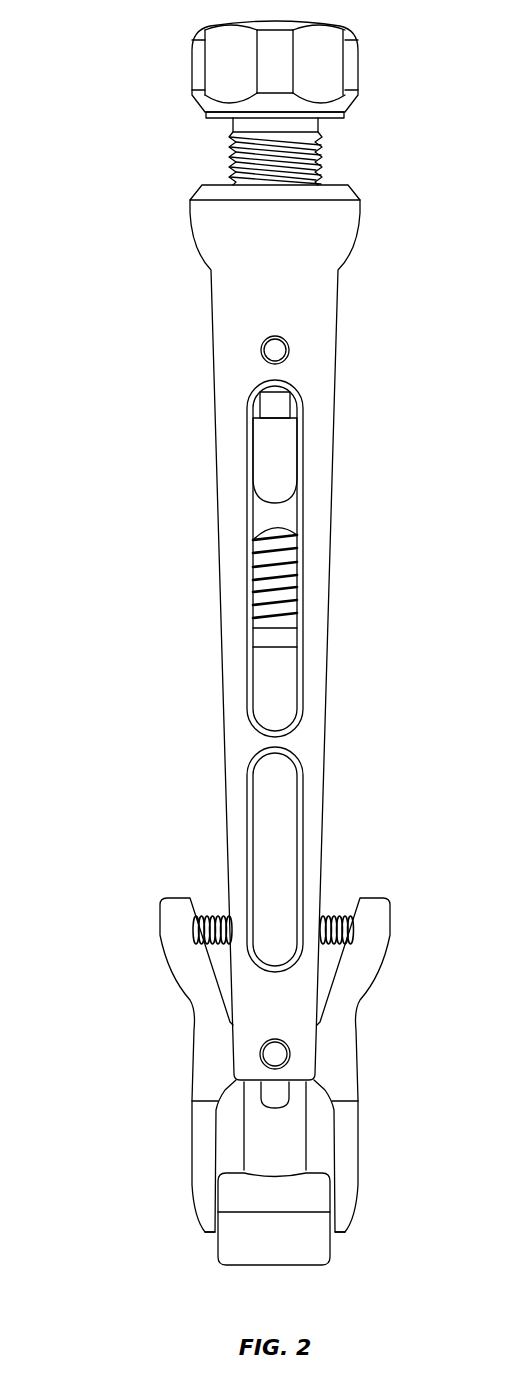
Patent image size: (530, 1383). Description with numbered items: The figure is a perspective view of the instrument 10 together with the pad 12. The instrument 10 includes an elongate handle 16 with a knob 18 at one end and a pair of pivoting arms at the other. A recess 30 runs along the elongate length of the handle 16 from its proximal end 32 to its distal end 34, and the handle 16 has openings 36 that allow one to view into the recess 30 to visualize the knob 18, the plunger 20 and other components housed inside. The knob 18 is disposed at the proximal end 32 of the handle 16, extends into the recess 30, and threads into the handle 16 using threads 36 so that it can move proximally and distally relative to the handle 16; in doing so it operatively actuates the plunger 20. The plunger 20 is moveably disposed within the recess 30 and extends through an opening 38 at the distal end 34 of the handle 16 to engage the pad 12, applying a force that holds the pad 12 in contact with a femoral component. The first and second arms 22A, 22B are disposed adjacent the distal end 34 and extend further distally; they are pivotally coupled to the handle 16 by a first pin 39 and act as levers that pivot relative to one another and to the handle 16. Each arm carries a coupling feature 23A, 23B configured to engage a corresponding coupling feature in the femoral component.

The instrument 10 is at (104, 190).
The pad 12 is at (217, 1273).
The handle 16 is at (334, 462).
The knob 18 is at (372, 24).
The plunger 20 is at (292, 1146).
The first arm 22A is at (192, 1170).
The second arm 22B is at (358, 1170).
The coupling feature 23A is at (214, 1235).
The coupling feature 23B is at (334, 1235).
The recess 30 is at (282, 706).
The proximal end 32 is at (333, 185).
The distal end 34 is at (297, 1086).
The threads 36 is at (232, 150).
The opening 38 is at (243, 1089).
The first pin 39 is at (277, 1052).